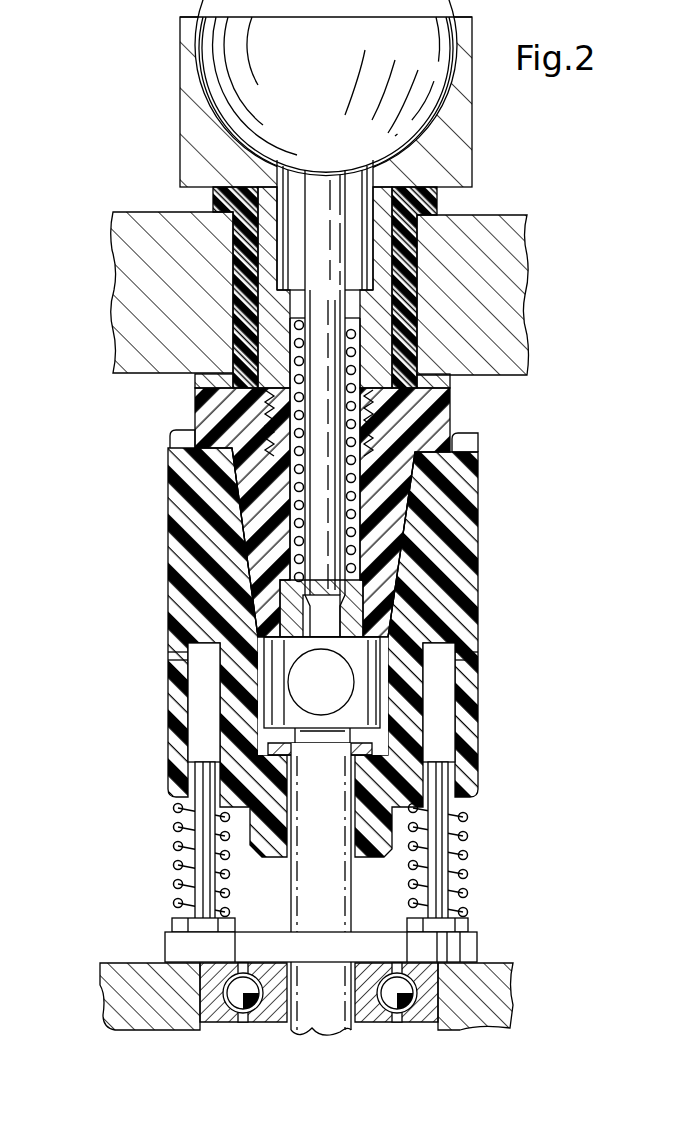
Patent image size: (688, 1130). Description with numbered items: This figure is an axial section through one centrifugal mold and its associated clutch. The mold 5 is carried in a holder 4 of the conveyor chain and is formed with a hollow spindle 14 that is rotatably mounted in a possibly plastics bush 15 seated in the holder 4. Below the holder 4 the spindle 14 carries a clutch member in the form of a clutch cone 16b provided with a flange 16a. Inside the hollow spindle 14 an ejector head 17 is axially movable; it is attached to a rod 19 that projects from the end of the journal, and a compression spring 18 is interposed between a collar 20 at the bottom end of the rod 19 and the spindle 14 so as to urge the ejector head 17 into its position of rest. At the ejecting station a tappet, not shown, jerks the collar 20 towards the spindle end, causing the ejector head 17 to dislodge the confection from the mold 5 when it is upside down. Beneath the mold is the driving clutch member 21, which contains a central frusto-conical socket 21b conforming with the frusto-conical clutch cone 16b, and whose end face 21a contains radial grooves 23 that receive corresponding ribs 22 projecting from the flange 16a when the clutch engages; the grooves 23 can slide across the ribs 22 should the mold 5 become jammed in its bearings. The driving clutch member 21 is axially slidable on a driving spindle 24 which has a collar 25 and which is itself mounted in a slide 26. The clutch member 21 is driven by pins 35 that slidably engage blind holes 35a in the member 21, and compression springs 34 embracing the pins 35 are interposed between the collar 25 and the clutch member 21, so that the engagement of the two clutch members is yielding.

The holder 4 is at (490, 332).
The centrifugal mold 5 is at (190, 94).
The hollow spindle 14 is at (382, 247).
The bush 15 is at (410, 298).
The flange 16a is at (430, 416).
The clutch cone 16b is at (400, 528).
The ejector head 17 is at (352, 188).
The compression spring 18 is at (298, 460).
The rod 19 is at (320, 487).
The collar 20 is at (280, 606).
The driving clutch member 21 is at (456, 562).
The end face 21a is at (456, 479).
The frusto-conical socket 21b is at (410, 600).
The ribs 22 is at (228, 438).
The radial grooves 23 is at (182, 440).
The driving spindle 24 is at (318, 905).
The collar 25 is at (193, 945).
The slide 26 is at (160, 998).
The compression springs 34 is at (465, 835).
The pins 35 is at (188, 832).
The blind holes 35a is at (195, 727).